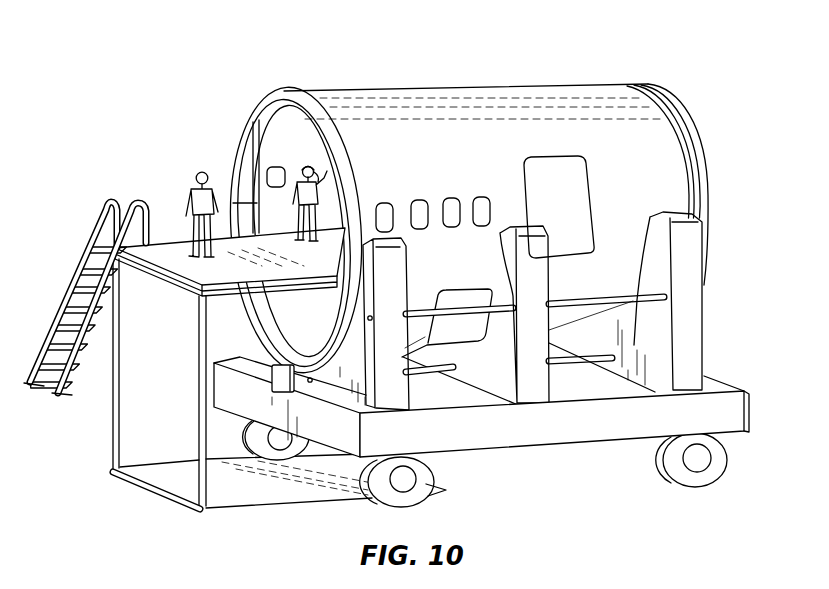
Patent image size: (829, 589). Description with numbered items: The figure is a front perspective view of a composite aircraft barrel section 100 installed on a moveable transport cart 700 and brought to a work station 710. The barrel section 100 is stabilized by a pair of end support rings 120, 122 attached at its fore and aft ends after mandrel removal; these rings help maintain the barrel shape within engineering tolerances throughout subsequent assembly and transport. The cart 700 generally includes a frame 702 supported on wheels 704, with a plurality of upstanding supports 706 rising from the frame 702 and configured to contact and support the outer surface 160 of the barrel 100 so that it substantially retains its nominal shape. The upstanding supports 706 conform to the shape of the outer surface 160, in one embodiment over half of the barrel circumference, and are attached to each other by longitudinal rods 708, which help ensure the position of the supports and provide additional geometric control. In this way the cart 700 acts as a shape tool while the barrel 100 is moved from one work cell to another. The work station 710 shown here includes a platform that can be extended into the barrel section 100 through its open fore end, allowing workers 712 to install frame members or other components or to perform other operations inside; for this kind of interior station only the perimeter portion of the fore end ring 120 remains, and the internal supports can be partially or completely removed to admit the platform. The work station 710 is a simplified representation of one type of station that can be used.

The barrel section 100 is at (556, 145).
The end support ring 120 is at (248, 152).
The end support ring 122 is at (704, 157).
The outer surface 160 is at (478, 196).
The moveable transport cart 700 is at (417, 289).
The frame 702 is at (587, 427).
The wheels 704 is at (447, 487).
The upstanding supports 706 is at (691, 354).
The longitudinal rods 708 is at (641, 315).
The work station 710 is at (155, 486).
The workers 712 is at (188, 195).